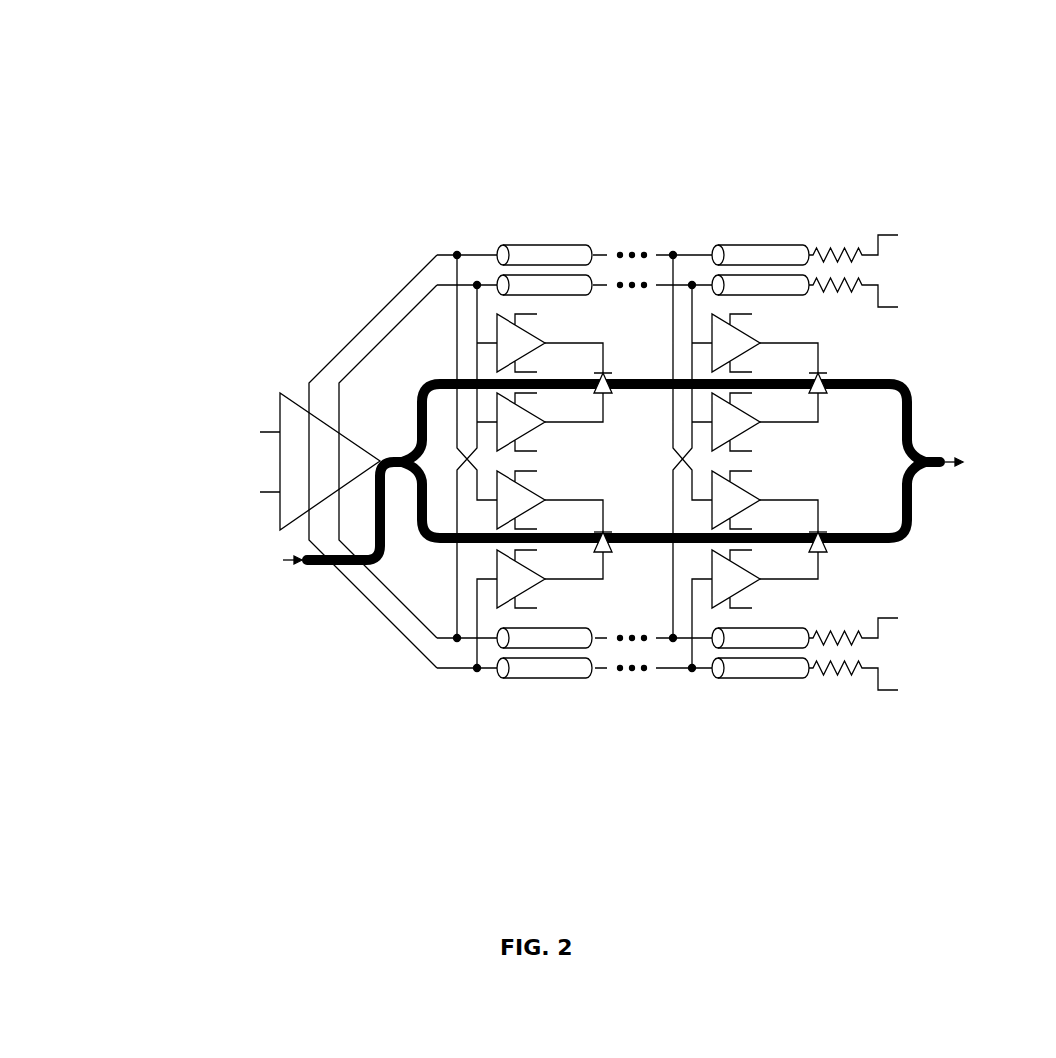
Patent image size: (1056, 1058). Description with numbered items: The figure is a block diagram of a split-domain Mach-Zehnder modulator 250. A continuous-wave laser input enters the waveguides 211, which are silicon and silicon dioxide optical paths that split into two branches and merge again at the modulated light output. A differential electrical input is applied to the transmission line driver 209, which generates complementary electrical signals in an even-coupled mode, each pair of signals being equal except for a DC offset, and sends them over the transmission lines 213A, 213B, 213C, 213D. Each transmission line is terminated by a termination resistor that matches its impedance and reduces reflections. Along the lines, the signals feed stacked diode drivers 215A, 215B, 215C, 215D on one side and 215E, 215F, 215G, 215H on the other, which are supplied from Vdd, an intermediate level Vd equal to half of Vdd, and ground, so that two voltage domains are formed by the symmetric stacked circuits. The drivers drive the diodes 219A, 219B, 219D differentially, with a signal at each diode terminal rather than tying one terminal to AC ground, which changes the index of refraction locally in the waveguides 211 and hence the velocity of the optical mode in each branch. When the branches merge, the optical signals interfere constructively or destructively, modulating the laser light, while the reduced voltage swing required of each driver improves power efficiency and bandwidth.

The split-domain Mach-Zehnder modulator 250 is at (136, 122).
The transmission line driver 209 is at (325, 496).
The waveguides 211 is at (394, 457).
The transmission line 213A is at (519, 245).
The transmission line 213B is at (596, 276).
The transmission line 213C is at (597, 647).
The transmission line 213D is at (523, 679).
The diode driver 215A is at (530, 350).
The diode driver 215B is at (530, 429).
The diode driver 215C is at (530, 507).
The diode driver 215D is at (530, 586).
The diode driver 215E is at (745, 350).
The diode driver 215F is at (745, 429).
The diode driver 215G is at (745, 507).
The diode driver 215H is at (745, 586).
The diode 219A is at (607, 395).
The diode 219B is at (607, 553).
The diode 219D is at (822, 553).